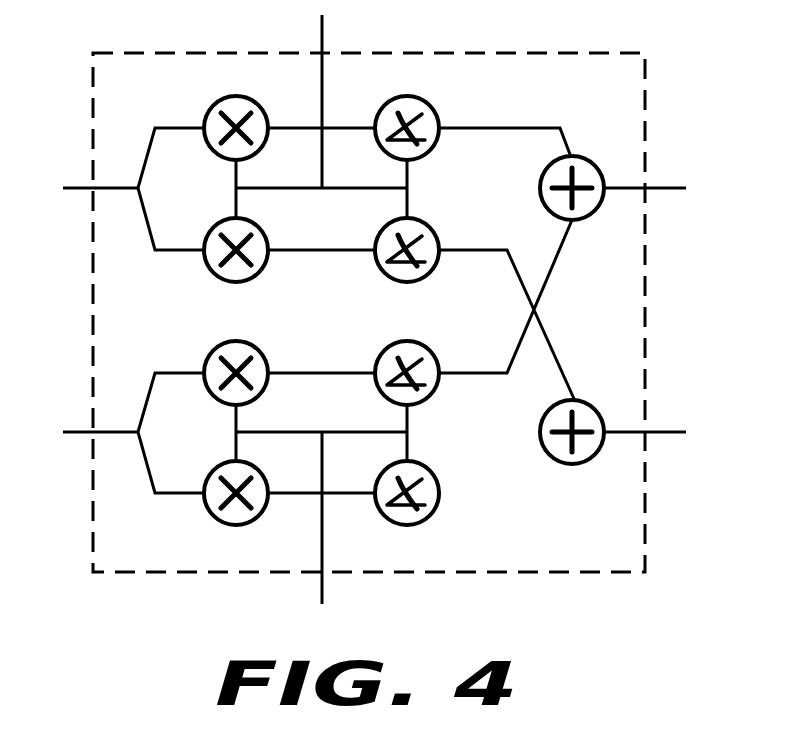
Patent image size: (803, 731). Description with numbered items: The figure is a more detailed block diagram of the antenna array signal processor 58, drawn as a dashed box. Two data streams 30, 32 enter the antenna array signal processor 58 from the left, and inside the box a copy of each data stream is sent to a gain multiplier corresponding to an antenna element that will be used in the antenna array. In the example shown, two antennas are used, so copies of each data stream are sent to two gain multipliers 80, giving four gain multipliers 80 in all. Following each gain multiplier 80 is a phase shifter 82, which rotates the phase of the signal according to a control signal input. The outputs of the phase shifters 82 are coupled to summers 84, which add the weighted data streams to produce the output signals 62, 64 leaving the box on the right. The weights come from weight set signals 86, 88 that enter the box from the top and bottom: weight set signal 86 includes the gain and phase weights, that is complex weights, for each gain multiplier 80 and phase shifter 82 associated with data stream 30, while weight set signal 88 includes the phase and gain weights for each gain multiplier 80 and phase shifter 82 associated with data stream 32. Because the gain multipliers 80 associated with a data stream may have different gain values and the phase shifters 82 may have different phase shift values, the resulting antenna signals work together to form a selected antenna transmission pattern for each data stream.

The antenna array signal processor 58 is at (462, 53).
The data stream 30 is at (76, 188).
The data stream 32 is at (76, 432).
The gain multiplier 80 is at (216, 104).
The phase shifter 82 is at (428, 104).
The summer 84 is at (594, 164).
The weight set signal 86 is at (322, 30).
The weight set signal 88 is at (322, 598).
The output signal 62 is at (672, 188).
The output signal 64 is at (672, 432).